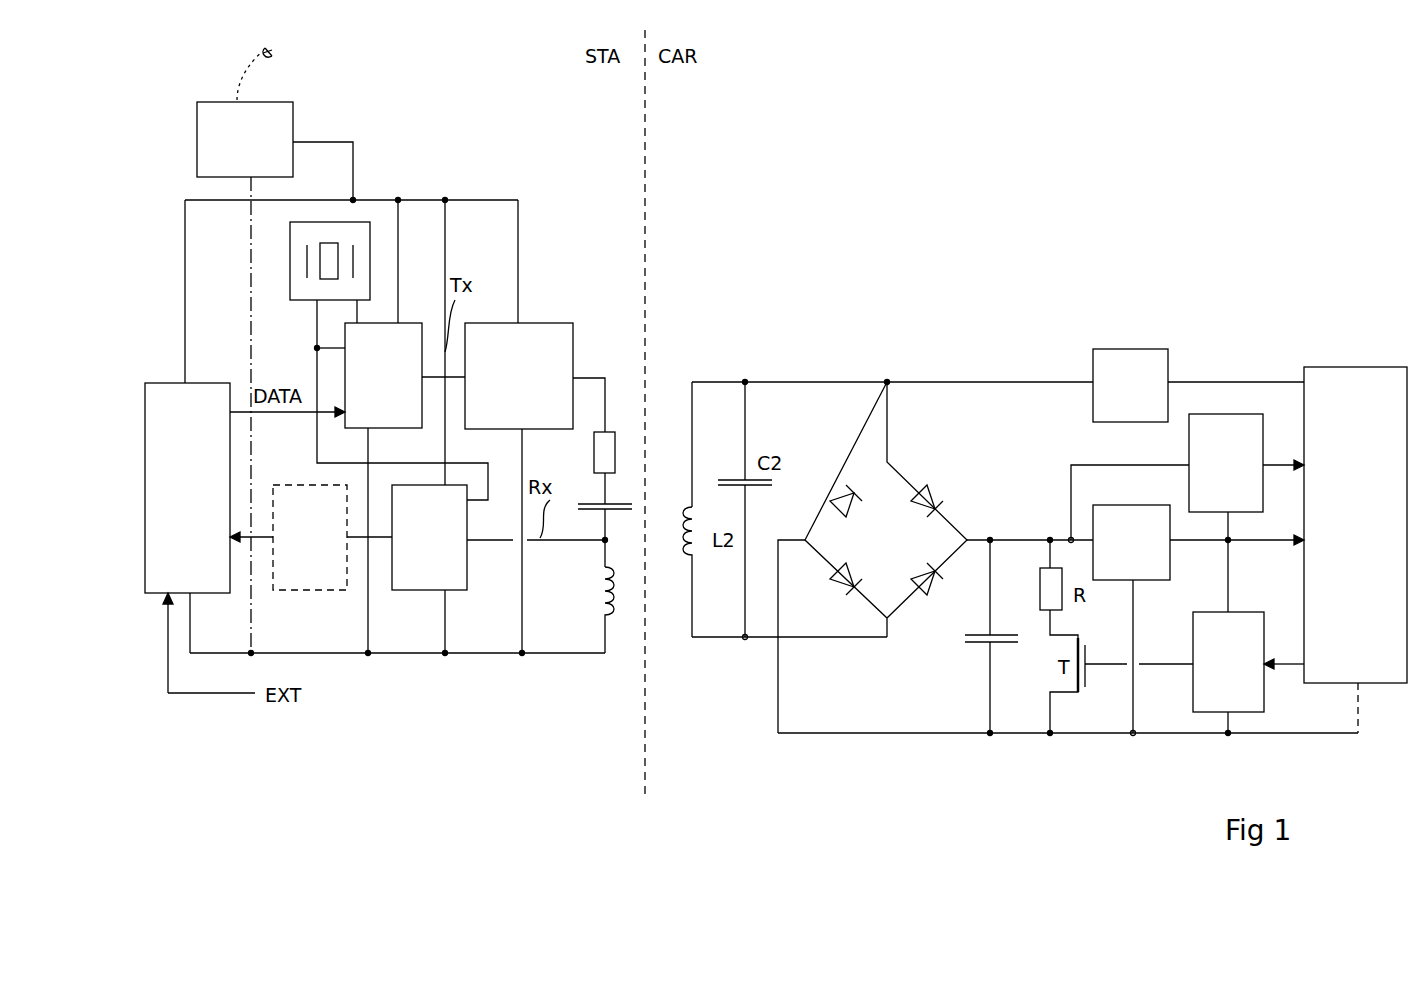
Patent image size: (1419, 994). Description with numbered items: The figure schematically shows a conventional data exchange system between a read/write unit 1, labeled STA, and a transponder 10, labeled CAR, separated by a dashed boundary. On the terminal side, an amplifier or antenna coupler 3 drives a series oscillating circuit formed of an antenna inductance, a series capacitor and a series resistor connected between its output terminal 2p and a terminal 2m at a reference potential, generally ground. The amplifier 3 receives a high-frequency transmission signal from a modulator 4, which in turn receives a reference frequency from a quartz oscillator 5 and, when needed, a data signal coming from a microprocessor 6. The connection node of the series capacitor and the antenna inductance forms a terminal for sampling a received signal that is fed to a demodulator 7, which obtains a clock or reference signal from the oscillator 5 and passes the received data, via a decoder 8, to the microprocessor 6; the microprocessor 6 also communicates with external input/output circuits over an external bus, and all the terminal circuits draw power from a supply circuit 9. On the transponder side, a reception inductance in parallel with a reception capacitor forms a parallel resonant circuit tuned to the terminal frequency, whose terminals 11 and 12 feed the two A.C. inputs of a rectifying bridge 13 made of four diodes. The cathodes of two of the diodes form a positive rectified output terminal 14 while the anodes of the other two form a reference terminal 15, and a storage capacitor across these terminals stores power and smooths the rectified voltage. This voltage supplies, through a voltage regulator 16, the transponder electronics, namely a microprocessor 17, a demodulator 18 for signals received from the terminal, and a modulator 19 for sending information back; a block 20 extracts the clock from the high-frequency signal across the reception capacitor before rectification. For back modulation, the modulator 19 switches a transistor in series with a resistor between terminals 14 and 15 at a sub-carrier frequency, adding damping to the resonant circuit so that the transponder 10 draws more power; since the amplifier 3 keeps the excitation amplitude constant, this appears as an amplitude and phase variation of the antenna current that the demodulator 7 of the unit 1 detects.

The read/write unit 1 is at (519, 108).
The output terminal 2p is at (601, 378).
The terminal at a reference potential 2m is at (560, 658).
The amplifier or antenna coupler 3 is at (552, 323).
The modulator 4 is at (421, 323).
The quartz oscillator 5 is at (290, 300).
The microprocessor 6 is at (210, 378).
The demodulator 7 is at (400, 593).
The decoder 8 is at (302, 593).
The supply circuit 9 is at (293, 112).
The transponder 10 is at (1040, 120).
The terminal of resonant circuit 11 is at (745, 382).
The terminal of resonant circuit 12 is at (745, 637).
The rectifying bridge 13 is at (895, 551).
The positive rectified output terminal 14 is at (990, 536).
The reference terminal 15 is at (948, 735).
The voltage regulator 16 is at (1170, 565).
The microprocessor 17 is at (1342, 360).
The demodulator 18 is at (1263, 435).
The modulator 19 is at (1250, 610).
The clock extraction block 20 is at (1143, 349).